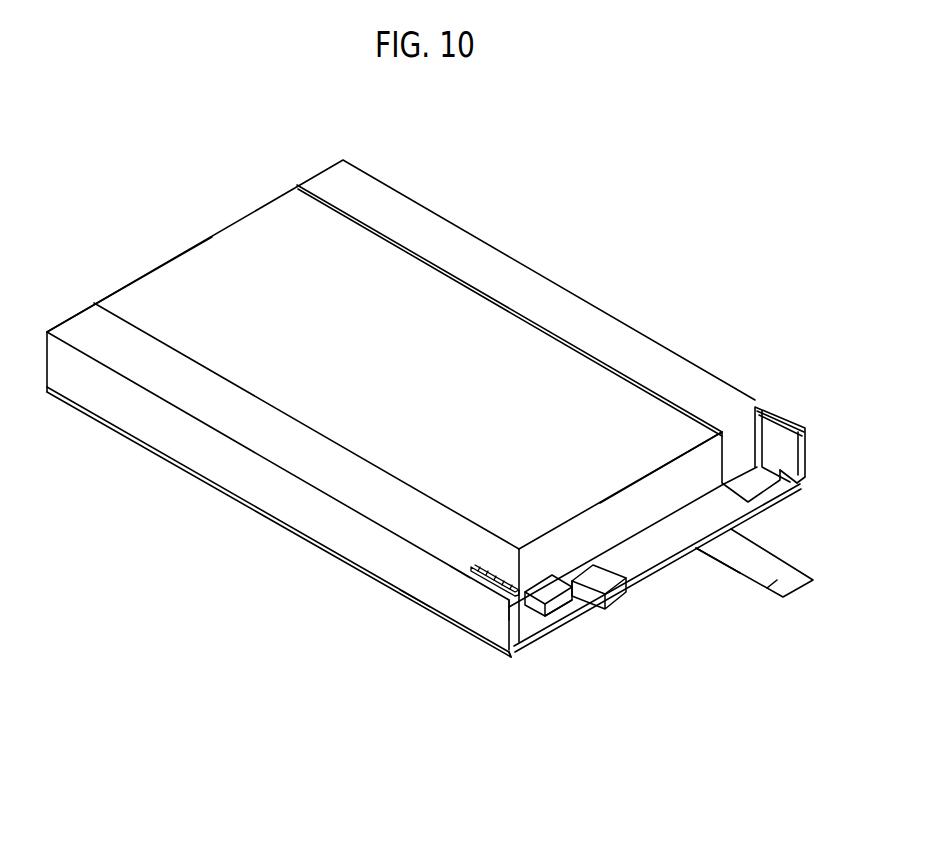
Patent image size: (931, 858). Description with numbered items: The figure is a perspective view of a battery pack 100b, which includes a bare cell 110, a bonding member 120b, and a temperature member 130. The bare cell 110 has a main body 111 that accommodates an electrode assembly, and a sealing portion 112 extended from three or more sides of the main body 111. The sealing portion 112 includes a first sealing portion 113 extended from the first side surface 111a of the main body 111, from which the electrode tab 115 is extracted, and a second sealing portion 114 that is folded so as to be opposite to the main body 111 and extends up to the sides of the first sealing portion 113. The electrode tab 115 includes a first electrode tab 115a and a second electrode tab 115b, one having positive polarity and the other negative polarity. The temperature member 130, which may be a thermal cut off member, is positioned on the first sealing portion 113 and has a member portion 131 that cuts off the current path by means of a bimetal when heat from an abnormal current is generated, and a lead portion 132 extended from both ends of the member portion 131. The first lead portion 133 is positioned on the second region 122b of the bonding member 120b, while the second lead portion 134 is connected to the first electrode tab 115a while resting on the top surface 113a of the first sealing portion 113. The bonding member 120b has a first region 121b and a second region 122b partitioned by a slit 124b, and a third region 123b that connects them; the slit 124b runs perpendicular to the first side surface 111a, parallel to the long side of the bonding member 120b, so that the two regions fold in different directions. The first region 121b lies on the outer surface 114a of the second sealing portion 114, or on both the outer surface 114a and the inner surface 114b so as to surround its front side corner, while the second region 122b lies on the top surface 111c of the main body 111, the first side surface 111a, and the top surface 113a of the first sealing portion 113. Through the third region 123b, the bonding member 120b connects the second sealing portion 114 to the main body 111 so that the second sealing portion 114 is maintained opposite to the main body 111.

The battery pack 100b is at (74, 131).
The bare cell 110 is at (239, 721).
The main body 111 is at (434, 414).
The first side surface 111a is at (628, 520).
The top surface of the main body 111c is at (212, 248).
The sealing portion 112 is at (493, 660).
The first sealing portion 113 is at (668, 578).
The top surface of the first sealing portion 113a is at (655, 545).
The second sealing portion 114 is at (787, 490).
The outer surface of the second sealing portion 114a is at (499, 657).
The inner surface of the second sealing portion 114b is at (756, 430).
The electrode tab 115 is at (683, 716).
The first electrode tab 115a is at (612, 600).
The second electrode tab 115b is at (778, 582).
The bonding member 120b is at (329, 637).
The first region 121b is at (413, 577).
The second region 122b is at (462, 573).
The third region 123b is at (493, 604).
The slit 124b is at (486, 566).
The temperature member 130 is at (578, 578).
The member portion 131 is at (541, 560).
The lead portion 132 is at (548, 726).
The first lead portion 133 is at (547, 615).
The second lead portion 134 is at (596, 607).